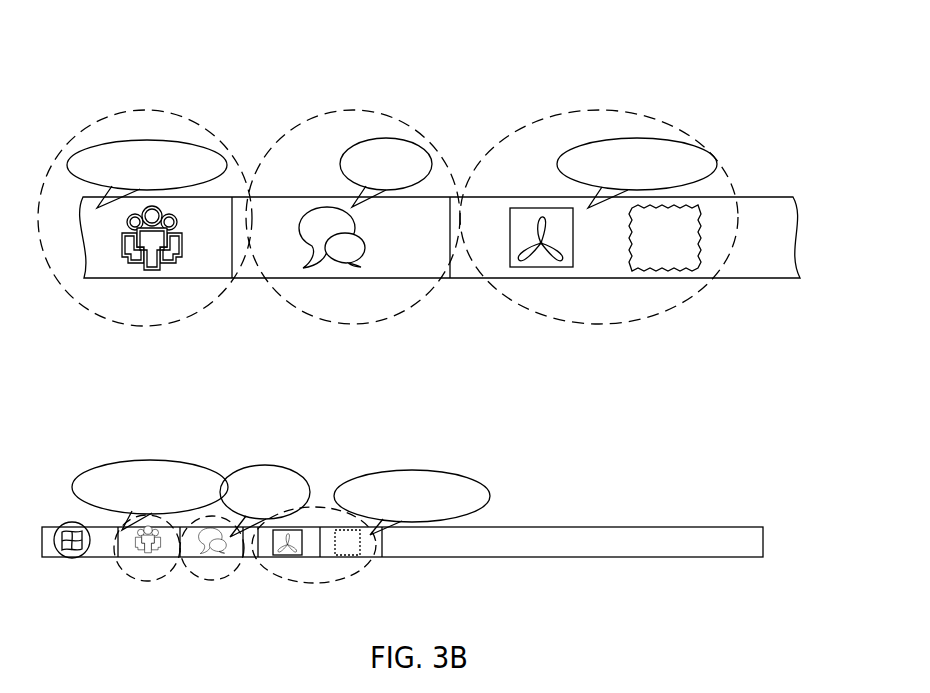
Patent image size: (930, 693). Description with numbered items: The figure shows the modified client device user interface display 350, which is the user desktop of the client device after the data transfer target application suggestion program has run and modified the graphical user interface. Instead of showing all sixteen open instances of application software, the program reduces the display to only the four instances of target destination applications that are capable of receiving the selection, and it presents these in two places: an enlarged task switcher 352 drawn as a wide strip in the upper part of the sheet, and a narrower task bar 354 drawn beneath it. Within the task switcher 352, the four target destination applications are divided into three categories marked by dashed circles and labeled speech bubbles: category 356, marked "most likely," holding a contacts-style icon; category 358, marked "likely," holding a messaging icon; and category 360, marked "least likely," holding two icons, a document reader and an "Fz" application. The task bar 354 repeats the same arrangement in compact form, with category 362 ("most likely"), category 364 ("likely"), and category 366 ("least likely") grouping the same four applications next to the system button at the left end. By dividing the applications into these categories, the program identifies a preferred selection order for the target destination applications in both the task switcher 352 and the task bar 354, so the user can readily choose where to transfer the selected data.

The modified client device user interface display 350 is at (676, 40).
The task switcher 352 is at (765, 280).
The task bar 354 is at (636, 527).
The category 356 is at (148, 110).
The category 358 is at (333, 110).
The category 360 is at (595, 110).
The category 362 is at (151, 460).
The category 364 is at (262, 465).
The category 366 is at (429, 470).